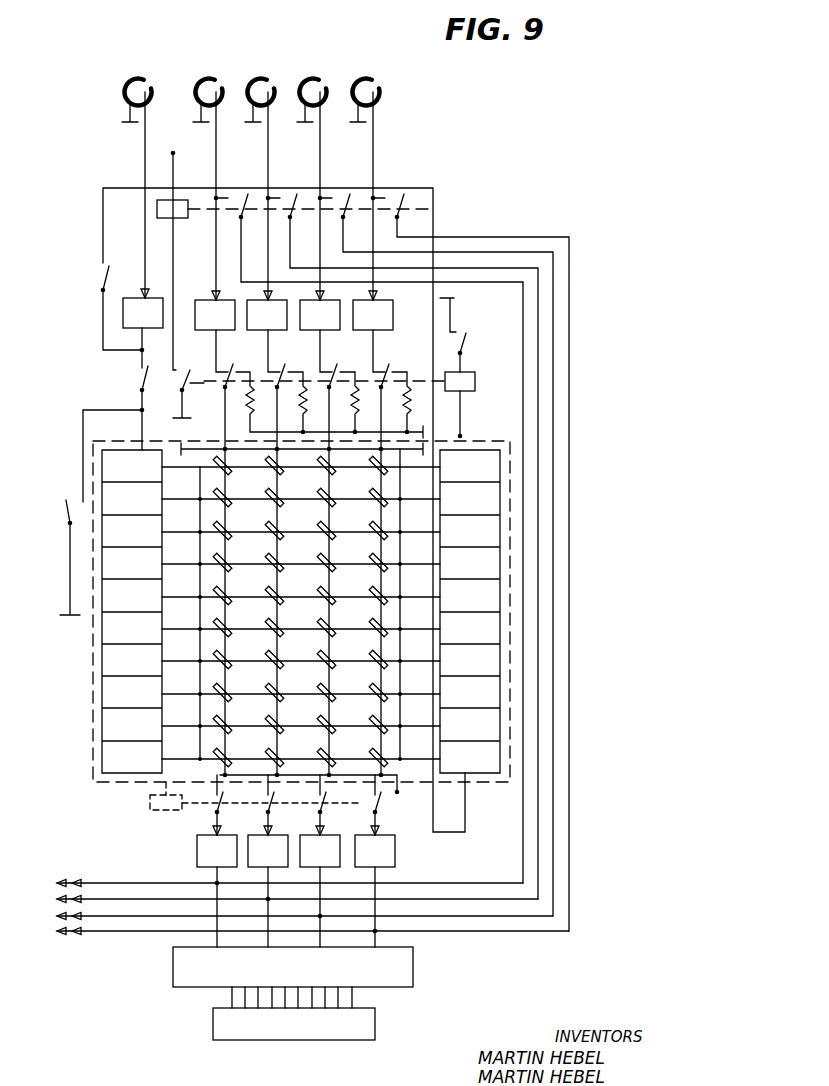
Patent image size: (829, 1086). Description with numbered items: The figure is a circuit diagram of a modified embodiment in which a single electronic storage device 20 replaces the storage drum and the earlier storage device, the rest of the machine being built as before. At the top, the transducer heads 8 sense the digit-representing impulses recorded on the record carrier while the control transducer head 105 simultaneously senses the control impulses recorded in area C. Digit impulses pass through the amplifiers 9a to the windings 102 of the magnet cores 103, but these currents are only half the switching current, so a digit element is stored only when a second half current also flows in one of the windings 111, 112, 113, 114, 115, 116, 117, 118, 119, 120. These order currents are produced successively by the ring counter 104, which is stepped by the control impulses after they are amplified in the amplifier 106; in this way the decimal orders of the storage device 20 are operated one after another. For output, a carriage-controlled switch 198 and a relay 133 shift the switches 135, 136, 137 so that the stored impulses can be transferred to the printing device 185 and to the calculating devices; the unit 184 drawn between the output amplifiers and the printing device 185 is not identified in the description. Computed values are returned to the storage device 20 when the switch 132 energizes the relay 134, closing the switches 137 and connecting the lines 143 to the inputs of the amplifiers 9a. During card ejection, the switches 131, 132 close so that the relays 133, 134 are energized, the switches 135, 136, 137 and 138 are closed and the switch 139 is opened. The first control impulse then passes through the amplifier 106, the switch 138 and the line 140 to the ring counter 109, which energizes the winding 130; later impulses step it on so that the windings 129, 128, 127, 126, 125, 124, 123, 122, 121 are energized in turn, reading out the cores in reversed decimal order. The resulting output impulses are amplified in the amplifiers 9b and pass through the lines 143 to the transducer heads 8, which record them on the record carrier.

The transducer heads 8 is at (255, 82).
The control transducer head 105 is at (130, 80).
The relay 134 is at (158, 206).
The switches 137 is at (248, 200).
The line 140 is at (103, 232).
The switch 138 is at (99, 283).
The amplifier 106 is at (127, 322).
The switch 139 is at (140, 384).
The switch 198 is at (64, 508).
The amplifiers 9a is at (270, 322).
The switches 136 is at (264, 374).
The switch 132 is at (186, 392).
The switch 131 is at (466, 340).
The relay 133 is at (477, 384).
The electronic storage device 20 is at (93, 460).
The ring counter 104 is at (102, 662).
The ring counter 109 is at (484, 470).
The windings 102 is at (233, 449).
The magnet cores 103 is at (226, 478).
The winding 111 is at (194, 470).
The winding 112 is at (194, 502).
The winding 113 is at (194, 535).
The winding 114 is at (194, 567).
The winding 115 is at (194, 600).
The winding 116 is at (194, 632).
The winding 117 is at (194, 664).
The winding 118 is at (194, 697).
The winding 119 is at (194, 729).
The winding 120 is at (194, 762).
The winding 121 is at (406, 470).
The winding 122 is at (406, 502).
The winding 123 is at (406, 535).
The winding 124 is at (406, 567).
The winding 125 is at (406, 600).
The winding 126 is at (406, 632).
The winding 127 is at (406, 664).
The winding 128 is at (406, 697).
The winding 129 is at (406, 729).
The winding 130 is at (406, 762).
The switches 135 is at (272, 794).
The amplifiers 9b is at (262, 850).
The lines 143 is at (124, 899).
The decoder 184 is at (178, 972).
The printing device 185 is at (225, 1022).